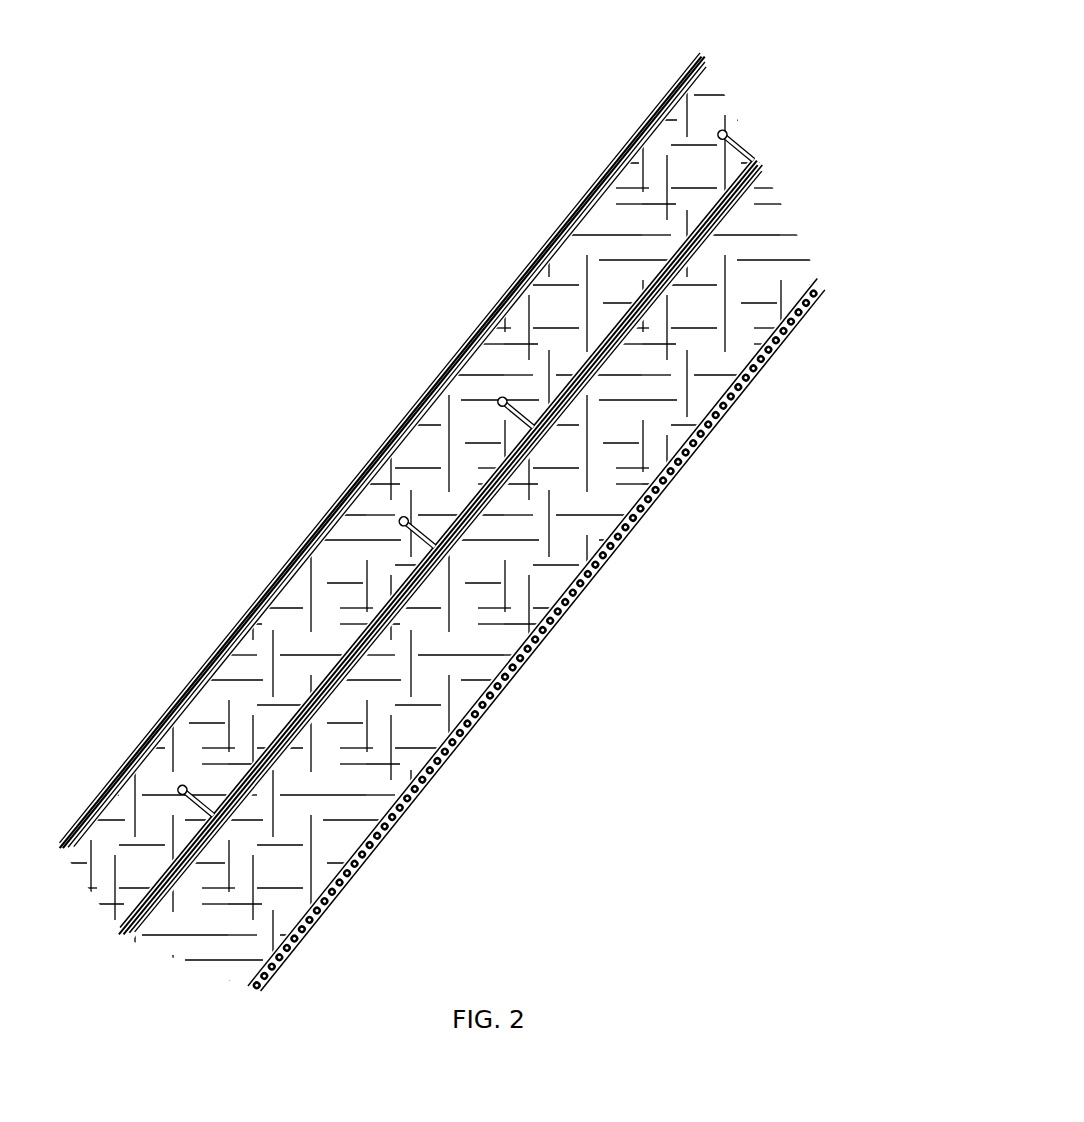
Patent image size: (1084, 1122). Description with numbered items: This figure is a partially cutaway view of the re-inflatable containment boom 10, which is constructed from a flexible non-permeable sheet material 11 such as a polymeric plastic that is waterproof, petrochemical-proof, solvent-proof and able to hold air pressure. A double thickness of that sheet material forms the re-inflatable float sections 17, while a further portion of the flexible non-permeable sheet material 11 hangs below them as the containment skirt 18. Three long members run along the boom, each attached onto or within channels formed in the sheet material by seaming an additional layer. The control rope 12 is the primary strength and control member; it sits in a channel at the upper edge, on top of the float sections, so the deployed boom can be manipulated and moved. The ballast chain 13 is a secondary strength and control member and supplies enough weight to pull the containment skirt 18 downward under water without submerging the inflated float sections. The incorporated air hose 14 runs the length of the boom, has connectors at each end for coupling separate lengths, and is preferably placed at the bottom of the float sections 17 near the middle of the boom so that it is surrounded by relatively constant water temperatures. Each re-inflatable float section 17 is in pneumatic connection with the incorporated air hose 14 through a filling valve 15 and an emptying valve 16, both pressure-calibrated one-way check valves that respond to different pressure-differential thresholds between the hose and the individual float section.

The re-inflatable containment boom 10 is at (280, 322).
The flexible non-permeable sheet material 11 is at (95, 949).
The control rope 12 is at (702, 62).
The ballast chain 13 is at (822, 290).
The incorporated air hose 14 is at (762, 165).
The filling valve 15 is at (537, 430).
The emptying valve 16 is at (438, 550).
The re-inflatable float section 17 is at (758, 86).
The containment skirt 18 is at (814, 206).